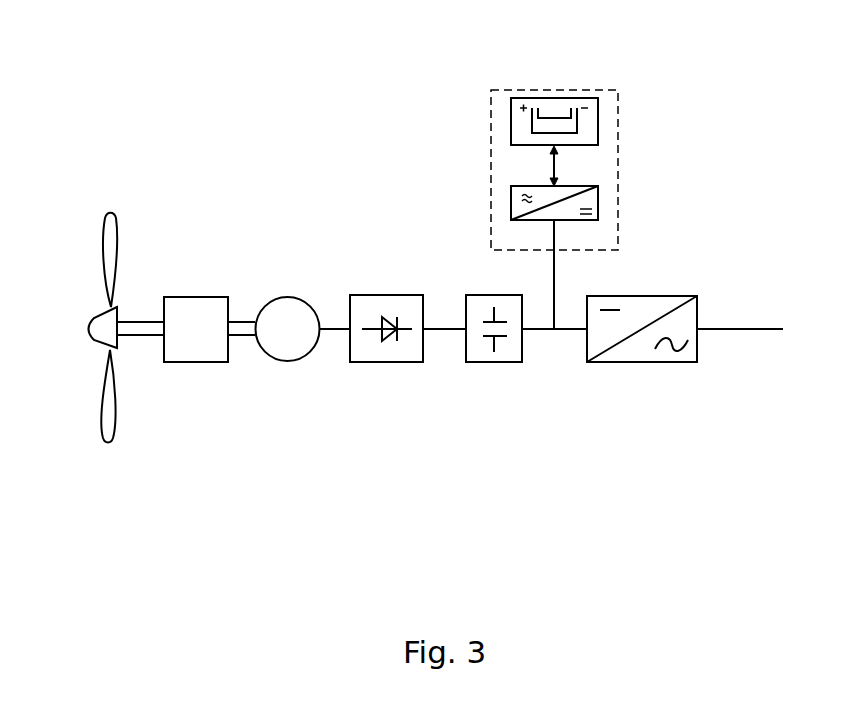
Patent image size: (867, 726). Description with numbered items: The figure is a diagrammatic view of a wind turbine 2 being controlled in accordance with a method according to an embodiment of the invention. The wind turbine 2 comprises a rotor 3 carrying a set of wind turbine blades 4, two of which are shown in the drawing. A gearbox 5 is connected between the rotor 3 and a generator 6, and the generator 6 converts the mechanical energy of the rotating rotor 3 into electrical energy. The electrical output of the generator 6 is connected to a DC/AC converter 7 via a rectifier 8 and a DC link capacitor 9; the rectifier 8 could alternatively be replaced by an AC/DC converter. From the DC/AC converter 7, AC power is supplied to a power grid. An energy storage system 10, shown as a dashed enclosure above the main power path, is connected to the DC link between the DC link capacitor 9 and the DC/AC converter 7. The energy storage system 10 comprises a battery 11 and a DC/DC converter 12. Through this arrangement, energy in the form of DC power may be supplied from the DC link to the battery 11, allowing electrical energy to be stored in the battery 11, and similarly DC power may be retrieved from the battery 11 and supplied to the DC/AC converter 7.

The wind turbine 2 is at (139, 71).
The rotor 3 is at (95, 335).
The wind turbine blades 4 is at (108, 233).
The gearbox 5 is at (192, 303).
The generator 6 is at (282, 315).
The DC/AC converter 7 is at (637, 350).
The rectifier 8 is at (372, 352).
The DC link capacitor 9 is at (482, 352).
The energy storage system 10 is at (618, 172).
The battery 11 is at (552, 107).
The DC/DC converter 12 is at (523, 205).